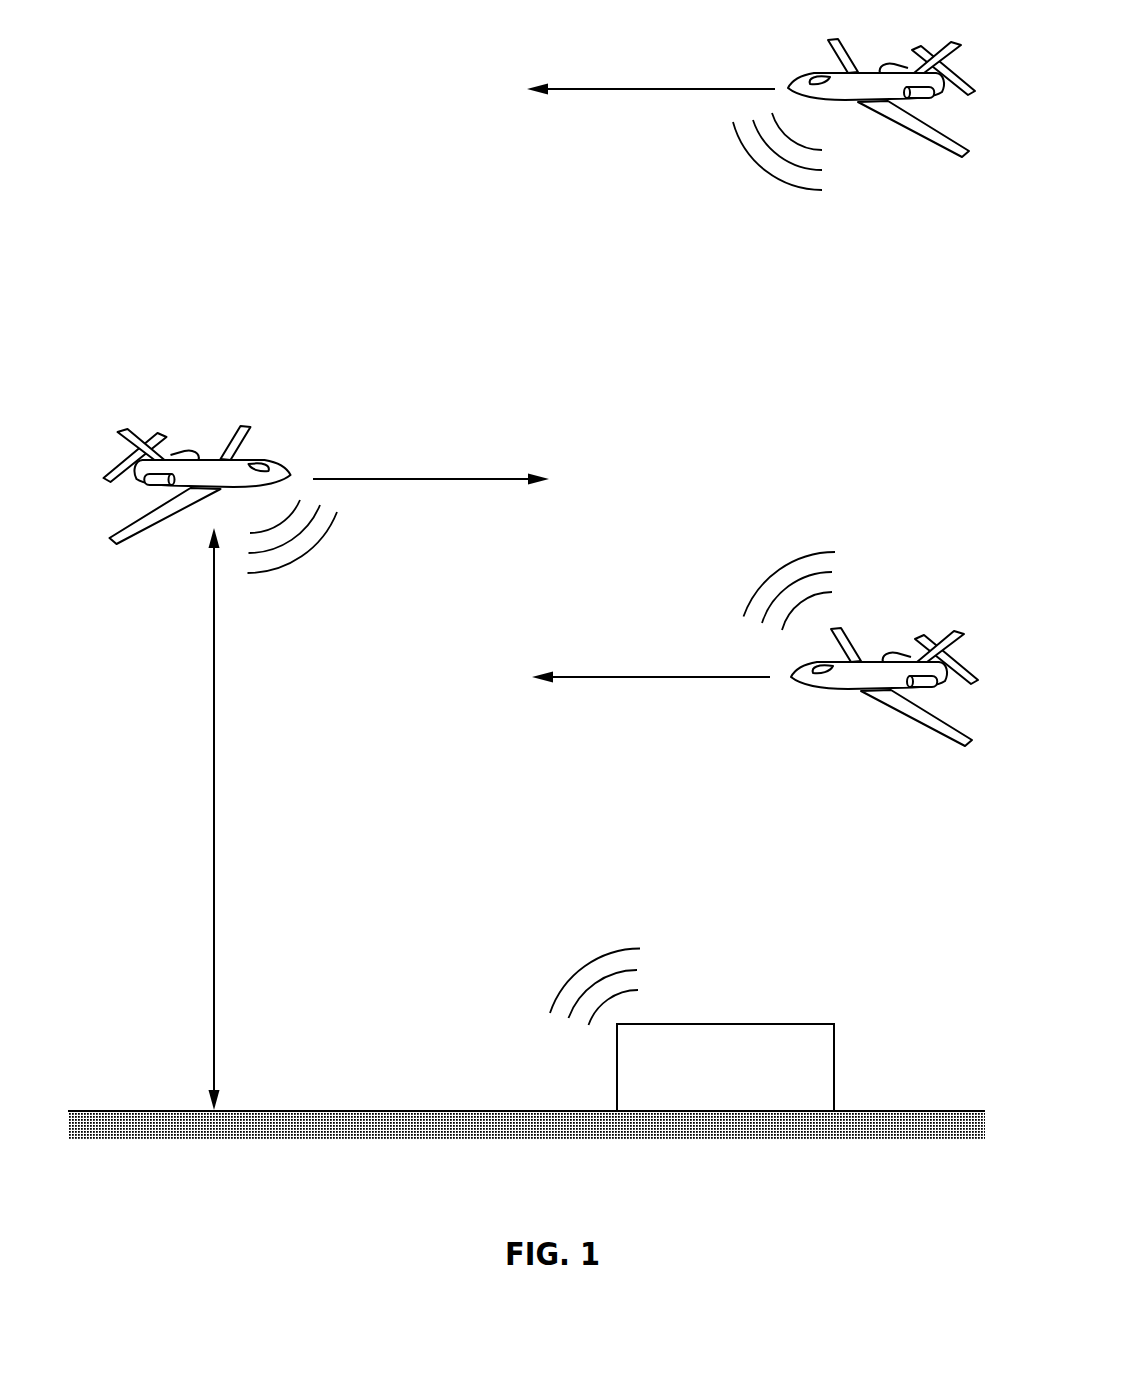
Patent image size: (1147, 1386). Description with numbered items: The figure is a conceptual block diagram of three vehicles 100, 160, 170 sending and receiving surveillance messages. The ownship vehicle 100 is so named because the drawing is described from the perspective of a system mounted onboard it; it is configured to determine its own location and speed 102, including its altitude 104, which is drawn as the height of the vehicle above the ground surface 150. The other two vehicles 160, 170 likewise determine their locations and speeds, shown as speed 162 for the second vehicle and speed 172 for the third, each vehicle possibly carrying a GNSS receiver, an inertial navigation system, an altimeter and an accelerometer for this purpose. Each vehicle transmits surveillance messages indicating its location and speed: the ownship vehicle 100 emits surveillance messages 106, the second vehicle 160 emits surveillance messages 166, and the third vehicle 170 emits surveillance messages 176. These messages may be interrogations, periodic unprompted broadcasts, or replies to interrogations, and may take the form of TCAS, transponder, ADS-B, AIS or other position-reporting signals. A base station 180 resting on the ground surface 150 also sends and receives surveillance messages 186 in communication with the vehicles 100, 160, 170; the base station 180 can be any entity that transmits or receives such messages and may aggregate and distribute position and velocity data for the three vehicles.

The ownship vehicle 100 is at (295, 352).
The speed 102 is at (498, 452).
The altitude 104 is at (215, 735).
The surveillance messages 106 is at (326, 591).
The ground surface 150 is at (360, 1110).
The vehicle 160 is at (888, 240).
The speed 162 is at (663, 90).
The surveillance messages 166 is at (747, 213).
The vehicle 170 is at (826, 752).
The speed 172 is at (675, 676).
The surveillance messages 176 is at (750, 543).
The base station 180 is at (745, 1094).
The surveillance messages 186 is at (550, 936).